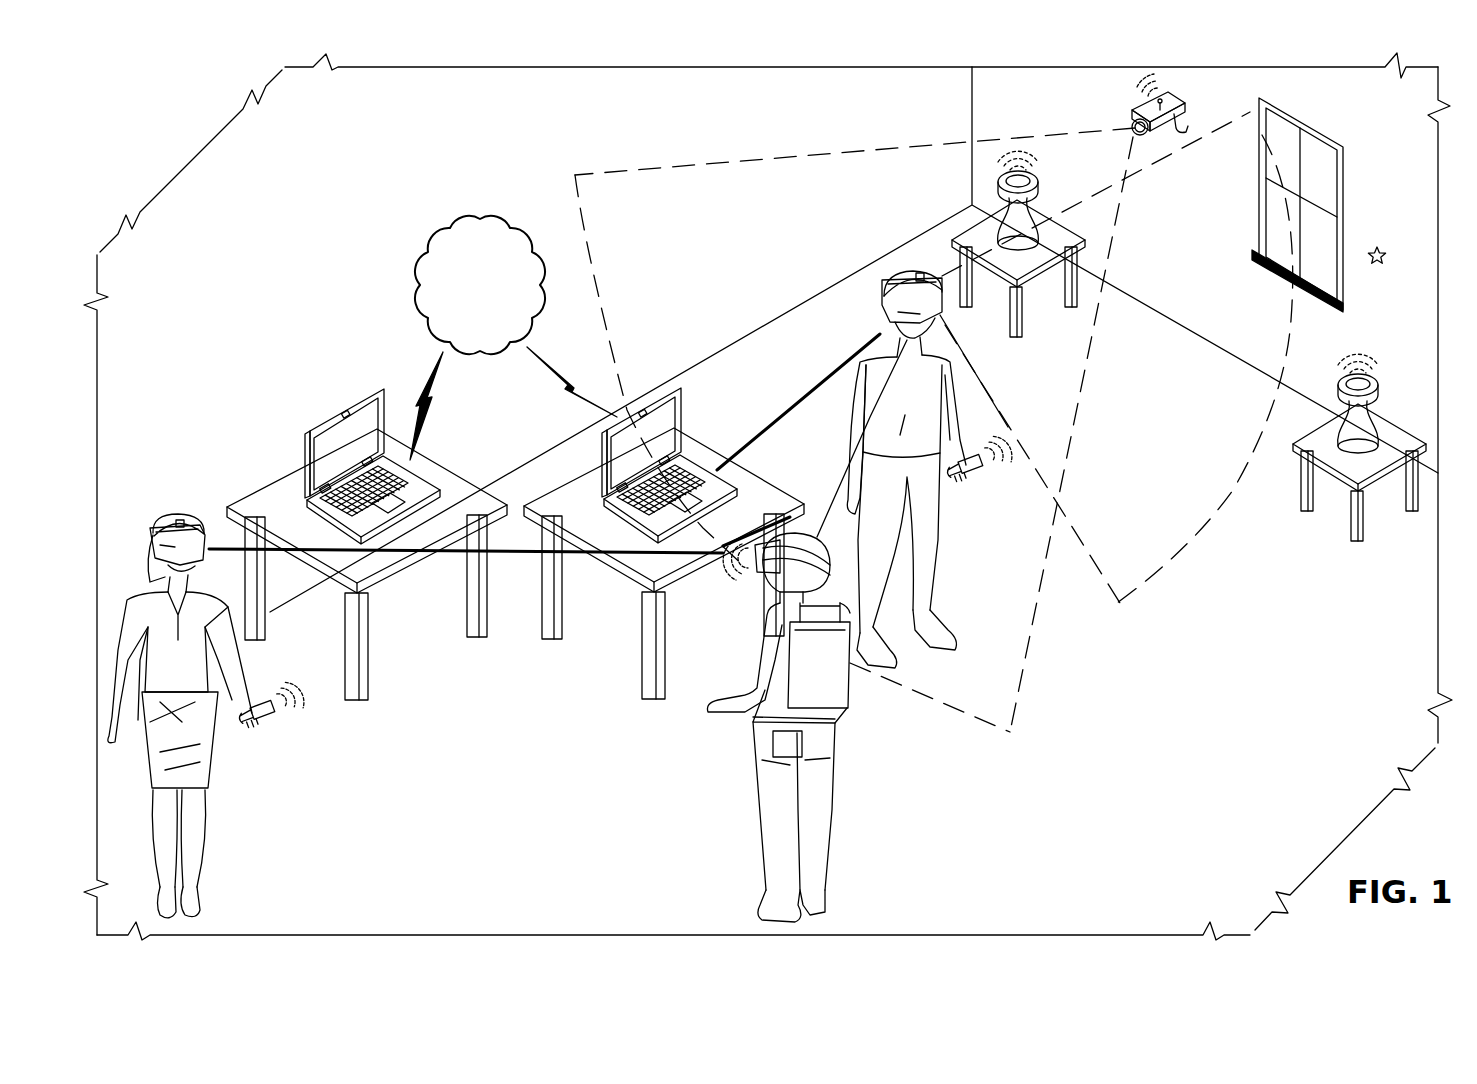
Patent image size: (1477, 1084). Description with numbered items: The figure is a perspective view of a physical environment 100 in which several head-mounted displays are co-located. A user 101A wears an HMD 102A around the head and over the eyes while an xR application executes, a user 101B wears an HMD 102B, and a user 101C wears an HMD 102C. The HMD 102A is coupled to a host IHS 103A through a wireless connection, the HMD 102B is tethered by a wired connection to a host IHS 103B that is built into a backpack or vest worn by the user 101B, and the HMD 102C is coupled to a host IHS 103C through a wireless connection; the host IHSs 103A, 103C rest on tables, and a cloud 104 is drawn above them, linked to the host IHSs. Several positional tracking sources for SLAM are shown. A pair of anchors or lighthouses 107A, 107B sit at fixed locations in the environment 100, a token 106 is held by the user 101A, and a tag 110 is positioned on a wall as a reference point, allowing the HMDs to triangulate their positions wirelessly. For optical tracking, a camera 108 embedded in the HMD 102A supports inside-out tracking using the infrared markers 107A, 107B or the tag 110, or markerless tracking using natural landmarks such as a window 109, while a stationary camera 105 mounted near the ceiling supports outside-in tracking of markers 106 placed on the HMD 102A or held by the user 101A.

The physical environment 100 is at (187, 166).
The user 101A is at (935, 538).
The user 101B is at (835, 818).
The user 101C is at (209, 829).
The head-mounted display 102A is at (893, 278).
The head-mounted display 102B is at (757, 573).
The head-mounted display 102C is at (178, 522).
The host IHS 103A is at (688, 418).
The host IHS 103B is at (848, 692).
The host IHS 103C is at (305, 446).
The cloud 104 is at (458, 322).
The camera 105 is at (1186, 104).
The token 106 is at (985, 474).
The anchor 107A is at (1038, 187).
The anchor 107B is at (1378, 386).
The camera 108 is at (930, 283).
The window 109 is at (1345, 192).
The tag 110 is at (1386, 251).